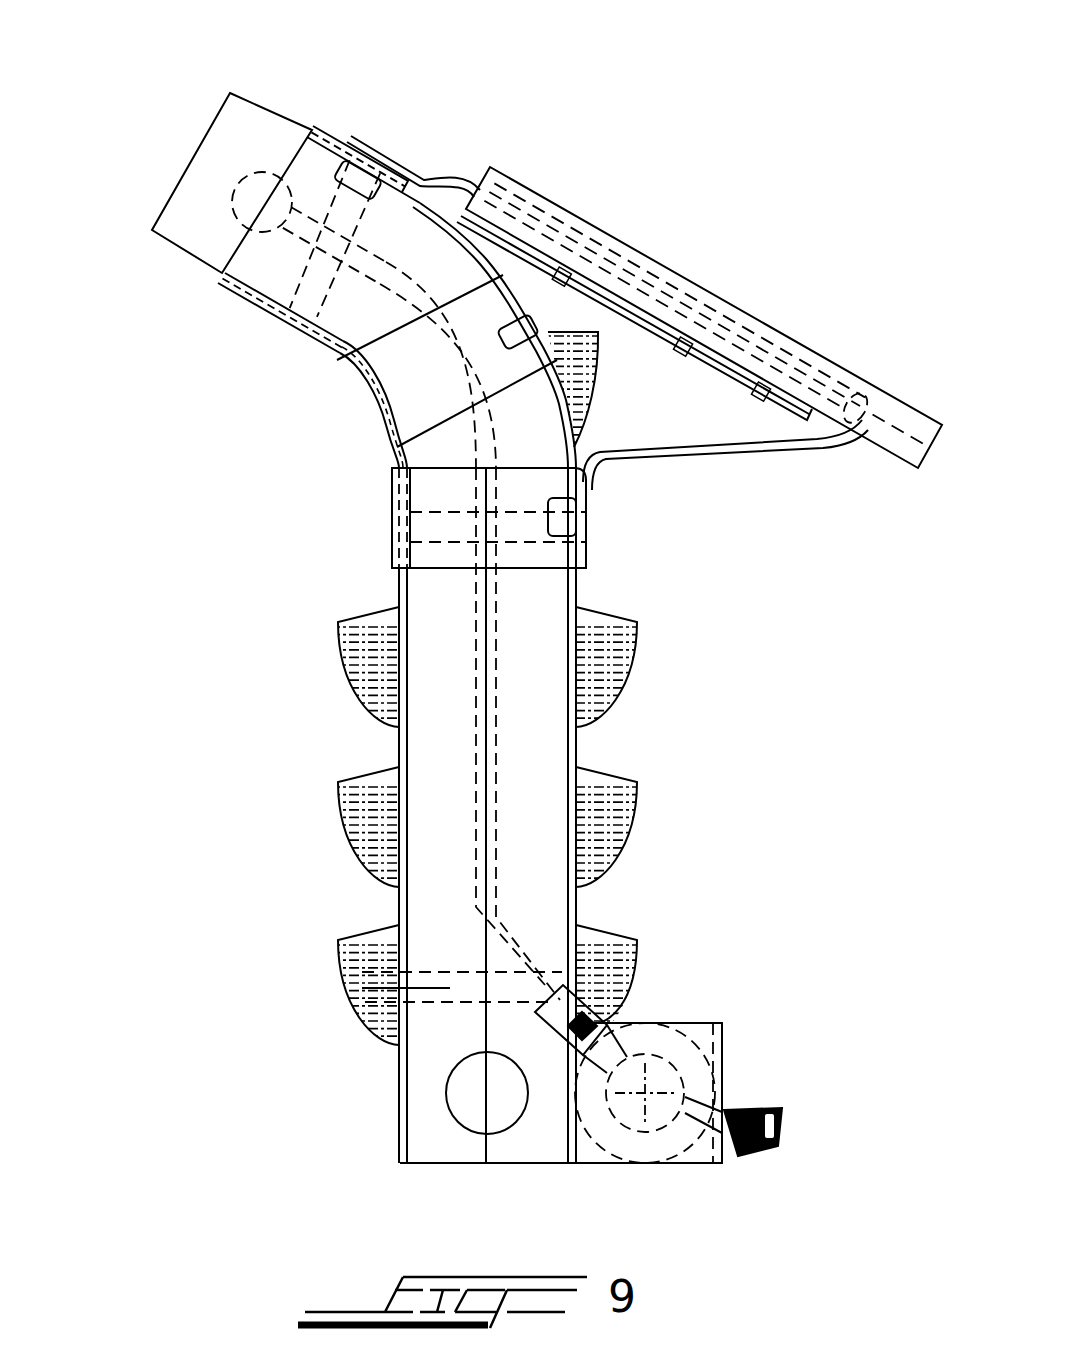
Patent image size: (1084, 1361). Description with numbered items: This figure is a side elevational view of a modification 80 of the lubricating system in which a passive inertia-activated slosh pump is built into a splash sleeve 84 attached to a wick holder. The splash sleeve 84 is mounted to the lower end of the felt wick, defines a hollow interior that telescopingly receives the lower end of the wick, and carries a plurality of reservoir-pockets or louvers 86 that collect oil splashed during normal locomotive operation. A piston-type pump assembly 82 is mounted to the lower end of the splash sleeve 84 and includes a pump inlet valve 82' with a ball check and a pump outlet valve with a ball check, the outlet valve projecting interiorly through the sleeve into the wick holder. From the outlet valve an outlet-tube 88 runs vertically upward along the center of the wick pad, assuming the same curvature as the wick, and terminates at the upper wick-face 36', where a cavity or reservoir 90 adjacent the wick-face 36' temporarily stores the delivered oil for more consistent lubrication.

The upper wick-face 36' is at (265, 189).
The cavity or reservoir 90 is at (250, 178).
The modification of the lubricating system 80 is at (683, 268).
The reservoir-pockets or louvers 86 is at (603, 648).
The outlet-tube 88 is at (563, 985).
The splash sleeve 84 is at (402, 1108).
The piston-type pump assembly 82 is at (727, 1033).
The pump inlet valve 82' is at (821, 1161).